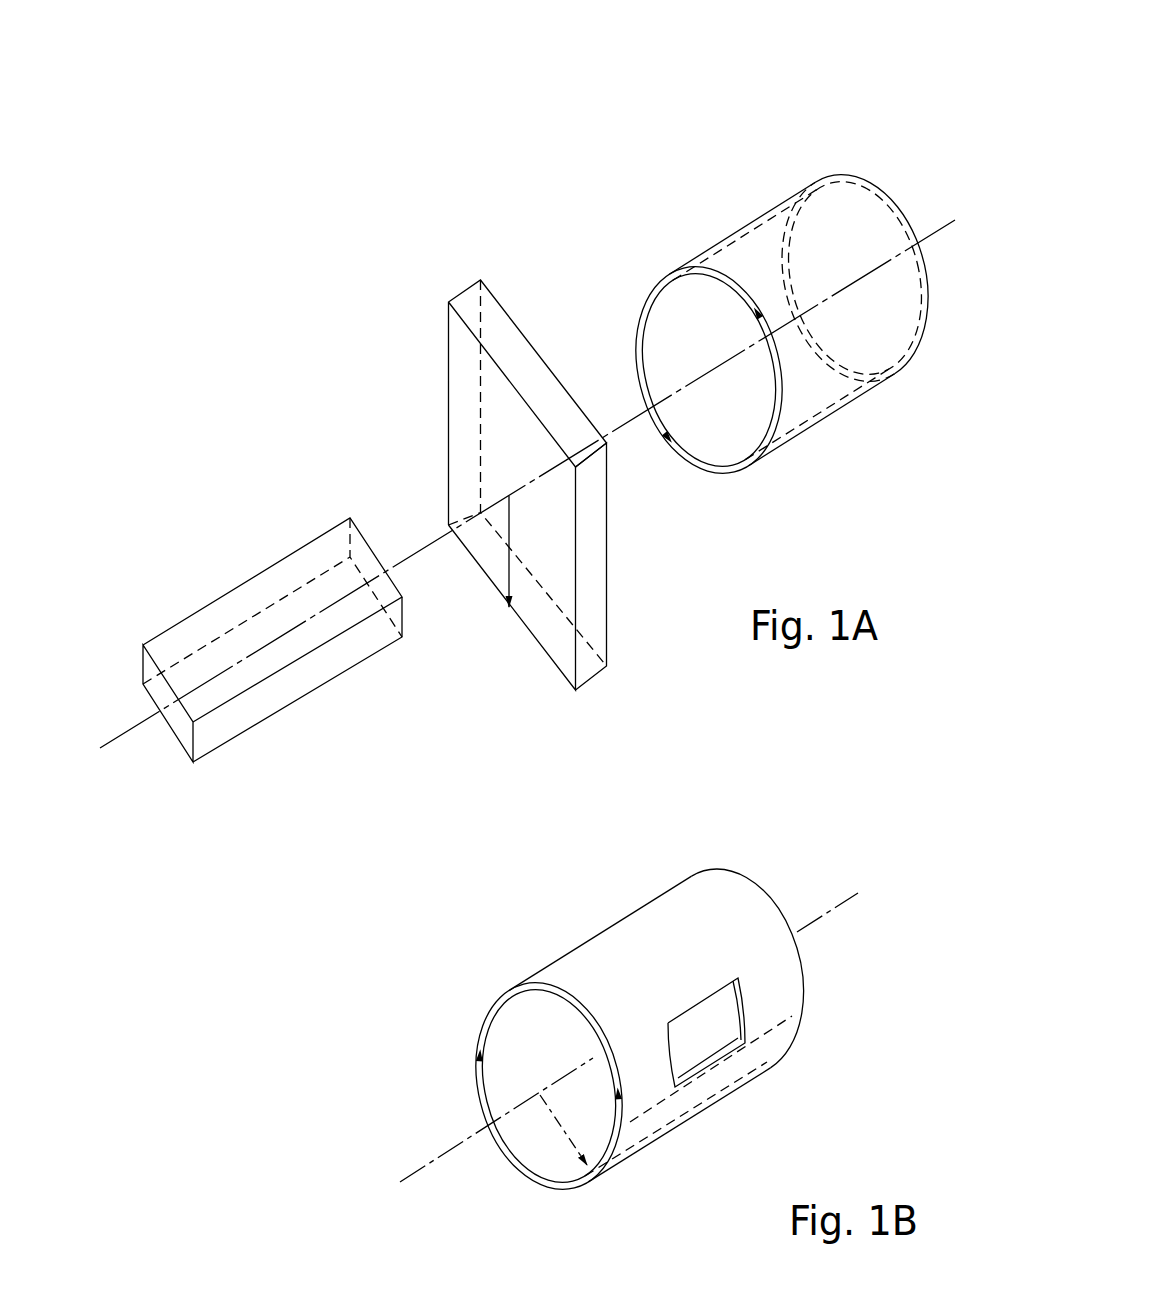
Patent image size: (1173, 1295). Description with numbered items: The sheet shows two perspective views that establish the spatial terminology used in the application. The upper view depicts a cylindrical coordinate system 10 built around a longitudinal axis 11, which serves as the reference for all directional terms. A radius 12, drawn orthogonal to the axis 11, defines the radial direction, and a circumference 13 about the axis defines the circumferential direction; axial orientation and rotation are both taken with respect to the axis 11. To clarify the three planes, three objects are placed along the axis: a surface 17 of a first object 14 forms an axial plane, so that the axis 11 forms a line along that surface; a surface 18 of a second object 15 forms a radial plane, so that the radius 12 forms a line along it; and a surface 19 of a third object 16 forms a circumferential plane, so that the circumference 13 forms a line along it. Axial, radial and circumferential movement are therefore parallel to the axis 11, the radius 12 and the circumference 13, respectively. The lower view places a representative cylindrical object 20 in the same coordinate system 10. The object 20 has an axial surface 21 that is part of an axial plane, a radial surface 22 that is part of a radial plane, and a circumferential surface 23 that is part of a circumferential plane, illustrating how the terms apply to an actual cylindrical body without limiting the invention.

In FIG. 1A, the cylindrical coordinate system 10 is at (368, 322).
In FIG. 1B, the cylindrical coordinate system 10 is at (785, 865).
In FIG. 1A, the longitudinal axis 11 is at (927, 230).
In FIG. 1B, the longitudinal axis 11 is at (433, 1160).
In FIG. 1A, the radius 12 is at (509, 565).
In FIG. 1B, the radius 12 is at (562, 1125).
In FIG. 1A, the circumference 13 is at (632, 352).
In FIG. 1B, the circumference 13 is at (497, 1008).
In FIG. 1A, the object 14 is at (222, 746).
In FIG. 1A, the object 15 is at (614, 672).
In FIG. 1A, the object 16 is at (800, 443).
In FIG. 1A, the surface 17 is at (259, 662).
In FIG. 1A, the surface 18 is at (460, 417).
In FIG. 1A, the surface 19 is at (745, 222).
In FIG. 1B, the cylindrical object 20 is at (667, 878).
In FIG. 1B, the axial surface 21 is at (712, 1058).
In FIG. 1B, the radial surface 22 is at (530, 1170).
In FIG. 1B, the circumferential surface 23 is at (633, 937).